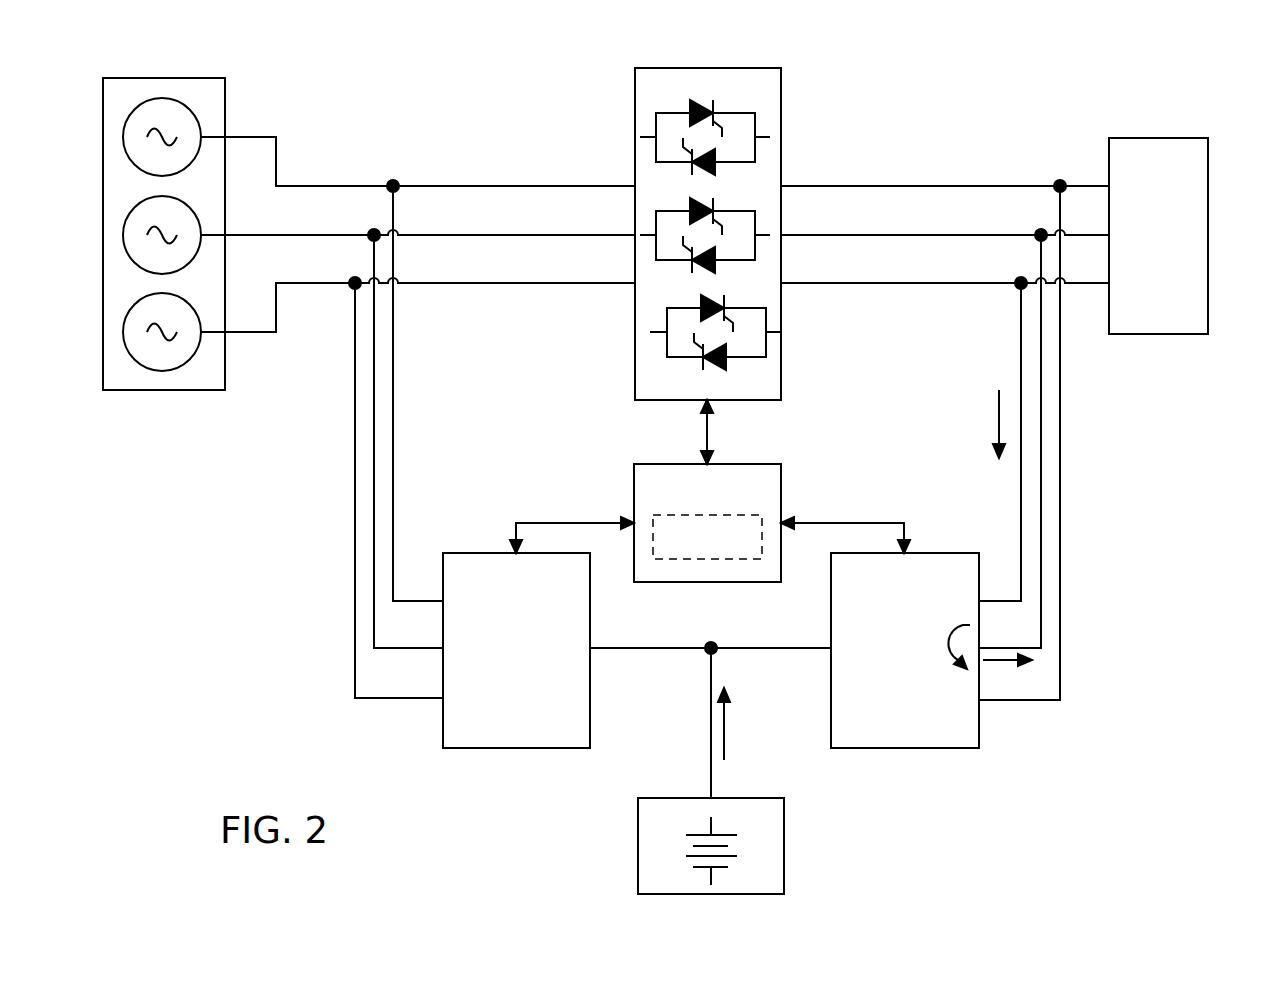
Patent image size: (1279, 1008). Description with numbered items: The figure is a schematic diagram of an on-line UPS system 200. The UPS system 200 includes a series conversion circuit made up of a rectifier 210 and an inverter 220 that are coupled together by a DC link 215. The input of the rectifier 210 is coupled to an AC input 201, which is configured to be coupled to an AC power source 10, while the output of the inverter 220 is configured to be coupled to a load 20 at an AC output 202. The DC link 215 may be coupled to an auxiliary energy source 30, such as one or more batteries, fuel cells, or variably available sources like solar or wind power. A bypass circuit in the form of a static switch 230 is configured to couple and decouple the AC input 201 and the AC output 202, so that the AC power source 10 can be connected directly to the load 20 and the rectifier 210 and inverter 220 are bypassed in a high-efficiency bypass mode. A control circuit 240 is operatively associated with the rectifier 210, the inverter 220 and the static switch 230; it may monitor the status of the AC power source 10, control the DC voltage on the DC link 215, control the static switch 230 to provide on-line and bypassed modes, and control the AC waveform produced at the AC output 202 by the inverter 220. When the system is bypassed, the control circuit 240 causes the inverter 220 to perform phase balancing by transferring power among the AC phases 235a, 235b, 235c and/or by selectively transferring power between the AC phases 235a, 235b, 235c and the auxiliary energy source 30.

The AC power source 10 is at (163, 78).
The load 20 is at (1158, 138).
The auxiliary energy source 30 is at (785, 845).
The UPS system 200 is at (1035, 805).
The AC input 201 is at (410, 157).
The AC output 202 is at (1043, 158).
The rectifier 210 is at (518, 748).
The DC link 215 is at (684, 648).
The inverter 220 is at (908, 748).
The static switch 230 is at (708, 68).
The AC phase 235a is at (825, 186).
The AC phase 235b is at (868, 235).
The AC phase 235c is at (921, 283).
The control circuit 240 is at (708, 582).